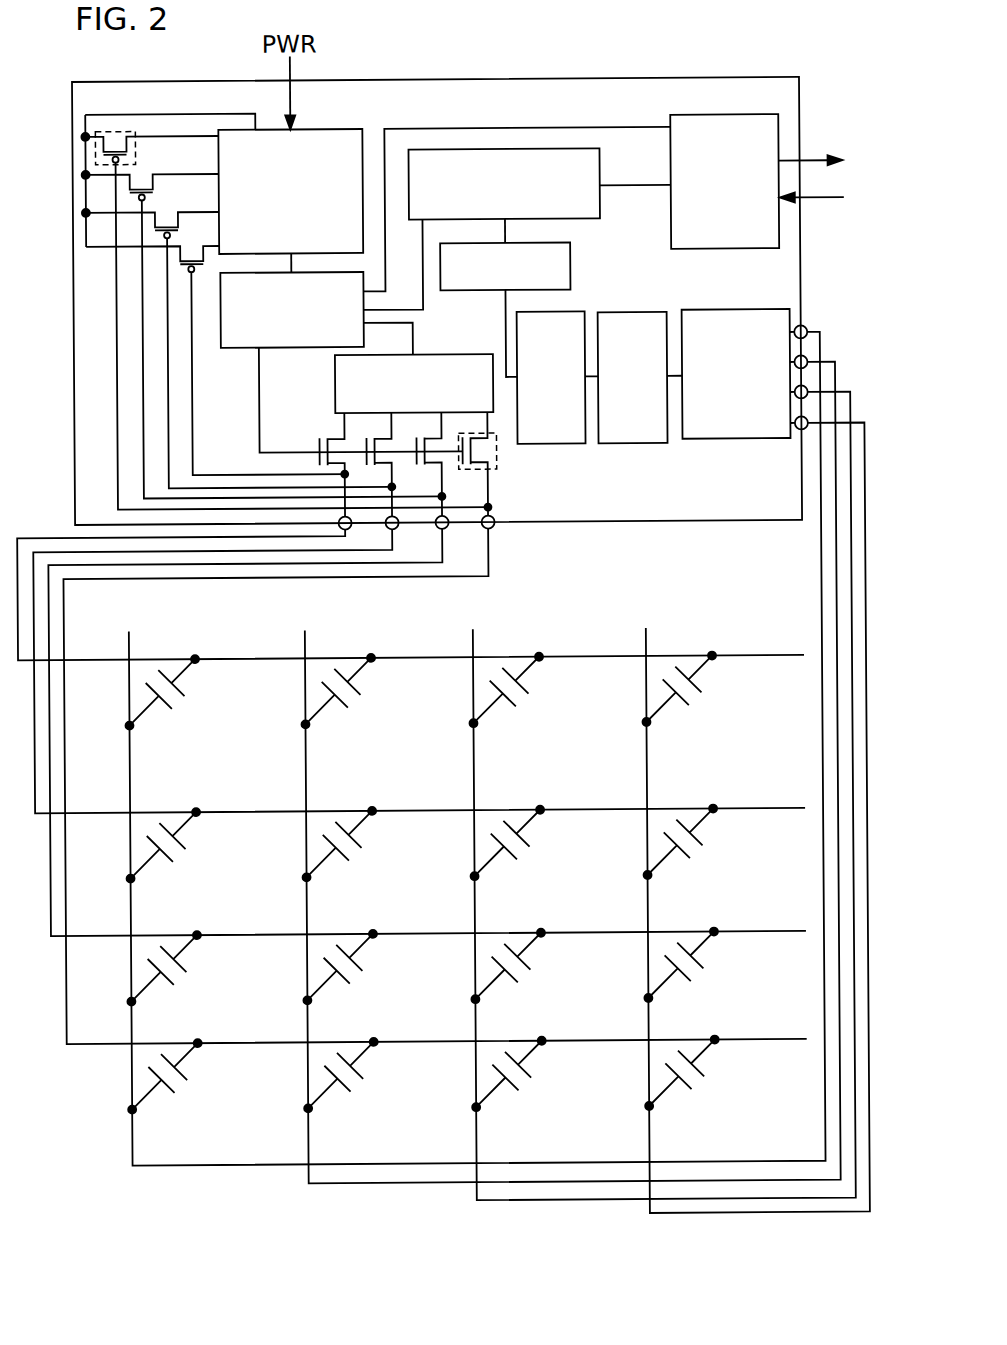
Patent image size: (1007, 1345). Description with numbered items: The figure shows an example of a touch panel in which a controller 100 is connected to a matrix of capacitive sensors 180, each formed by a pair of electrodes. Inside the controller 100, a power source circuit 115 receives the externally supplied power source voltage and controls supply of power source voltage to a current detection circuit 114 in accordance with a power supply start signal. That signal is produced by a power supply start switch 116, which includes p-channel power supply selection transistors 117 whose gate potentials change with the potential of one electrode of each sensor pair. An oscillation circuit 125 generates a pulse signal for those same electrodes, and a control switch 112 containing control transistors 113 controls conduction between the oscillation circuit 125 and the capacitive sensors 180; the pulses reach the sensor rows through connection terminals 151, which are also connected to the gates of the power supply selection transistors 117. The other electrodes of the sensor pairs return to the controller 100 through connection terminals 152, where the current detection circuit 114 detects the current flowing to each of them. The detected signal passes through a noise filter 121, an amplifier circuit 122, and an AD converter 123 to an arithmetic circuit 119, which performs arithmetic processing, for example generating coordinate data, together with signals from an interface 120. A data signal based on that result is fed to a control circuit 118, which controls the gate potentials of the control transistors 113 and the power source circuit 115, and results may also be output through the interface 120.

The controller 100 is at (737, 526).
The control switch 112 is at (494, 448).
The control transistor 113 is at (476, 473).
The current detection circuit 114 is at (740, 443).
The power source circuit 115 is at (314, 132).
The power supply start switch 116 is at (168, 180).
The power supply selection transistor 117 is at (126, 143).
The control circuit 118 is at (295, 350).
The arithmetic circuit 119 is at (599, 204).
The interface 120 is at (723, 253).
The noise filter 121 is at (652, 447).
The amplifier circuit 122 is at (554, 448).
The AD converter 123 is at (571, 261).
The oscillation circuit 125 is at (331, 404).
The connection terminal 151 is at (492, 530).
The connection terminal 152 is at (805, 330).
The capacitive sensor 180 is at (182, 695).